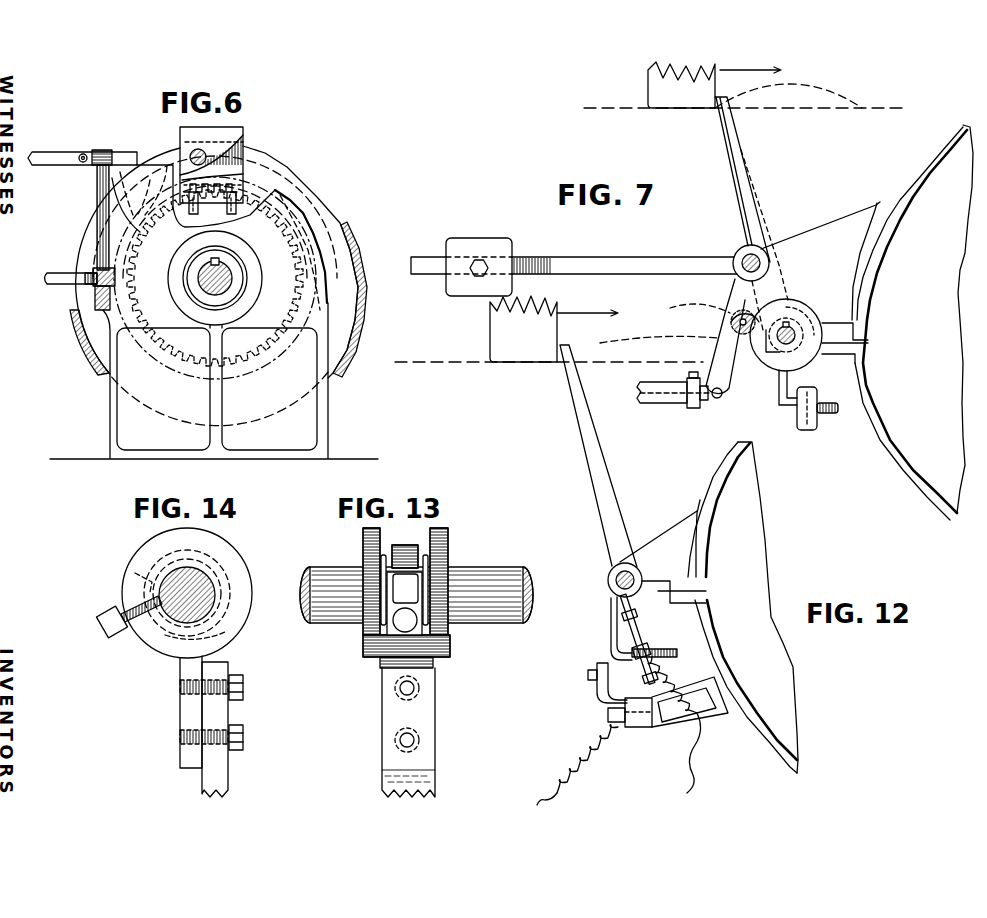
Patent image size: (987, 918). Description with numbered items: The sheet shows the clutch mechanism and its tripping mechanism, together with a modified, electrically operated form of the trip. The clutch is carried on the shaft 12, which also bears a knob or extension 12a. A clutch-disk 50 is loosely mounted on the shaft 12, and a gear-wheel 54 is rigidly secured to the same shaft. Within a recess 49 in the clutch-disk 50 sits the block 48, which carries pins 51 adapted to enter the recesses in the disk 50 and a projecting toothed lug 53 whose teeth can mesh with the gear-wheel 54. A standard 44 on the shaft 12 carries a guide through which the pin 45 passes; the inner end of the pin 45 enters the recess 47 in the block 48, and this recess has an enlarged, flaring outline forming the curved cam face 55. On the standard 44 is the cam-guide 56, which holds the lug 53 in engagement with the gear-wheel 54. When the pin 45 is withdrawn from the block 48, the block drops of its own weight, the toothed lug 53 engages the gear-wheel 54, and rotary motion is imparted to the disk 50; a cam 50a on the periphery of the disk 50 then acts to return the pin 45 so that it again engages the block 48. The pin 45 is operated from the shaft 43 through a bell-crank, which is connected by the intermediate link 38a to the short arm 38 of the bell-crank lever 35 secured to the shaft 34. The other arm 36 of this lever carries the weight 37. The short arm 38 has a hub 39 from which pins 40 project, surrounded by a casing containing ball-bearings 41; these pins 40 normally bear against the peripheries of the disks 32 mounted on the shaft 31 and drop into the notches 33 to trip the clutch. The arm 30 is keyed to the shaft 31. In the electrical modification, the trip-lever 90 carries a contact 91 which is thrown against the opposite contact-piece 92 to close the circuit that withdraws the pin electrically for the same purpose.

In FIG. 6, the shaft 12 is at (222, 280).
In FIG. 6, the shaft extension knob 12a is at (47, 278).
In FIG. 7, the arm 30 is at (733, 176).
In FIG. 7, the shaft 31 is at (789, 333).
In FIG. 12, the shaft 31 is at (615, 580).
In FIG. 13, the shaft 31 is at (488, 575).
In FIG. 14, the shaft 31 is at (207, 580).
In FIG. 7, the disks 32 is at (853, 320).
In FIG. 7, the notches 33 is at (763, 345).
In FIG. 7, the shaft 34 is at (757, 262).
In FIG. 7, the bell-crank lever 35 is at (731, 279).
In FIG. 7, the arm 36 is at (587, 266).
In FIG. 7, the weight 37 is at (485, 244).
In FIG. 7, the short arm 38 is at (727, 356).
In FIG. 7, the intermediate link 38a is at (656, 399).
In FIG. 7, the hub 39 is at (733, 316).
In FIG. 7, the pins 40 is at (735, 327).
In FIG. 7, the ball-bearings 41 is at (671, 306).
In FIG. 6, the shaft 43 is at (100, 150).
In FIG. 6, the standard 44 is at (307, 300).
In FIG. 6, the pin 45 is at (196, 155).
In FIG. 6, the recess 47 is at (230, 157).
In FIG. 6, the block 48 is at (217, 130).
In FIG. 6, the recess 49 is at (233, 173).
In FIG. 6, the clutch-disk 50 is at (95, 307).
In FIG. 6, the cam 50a is at (360, 338).
In FIG. 6, the pins 51 is at (165, 180).
In FIG. 6, the toothed lug 53 is at (217, 178).
In FIG. 6, the gear-wheel 54 is at (322, 236).
In FIG. 6, the cam face 55 is at (243, 139).
In FIG. 6, the cam-guide 56 is at (300, 218).
In FIG. 12, the trip-lever 90 is at (586, 448).
In FIG. 12, the contact 91 is at (644, 679).
In FIG. 13, the contact 91 is at (425, 711).
In FIG. 14, the contact 91 is at (217, 715).
In FIG. 12, the contact-piece 92 is at (607, 668).